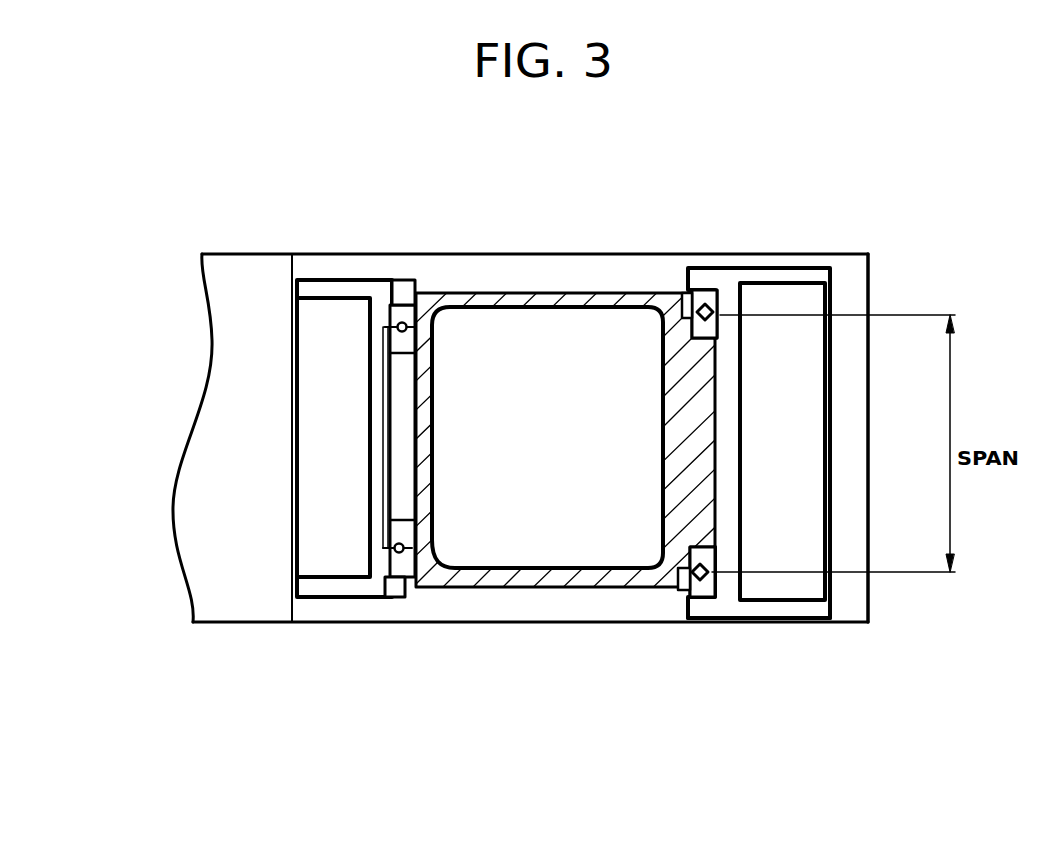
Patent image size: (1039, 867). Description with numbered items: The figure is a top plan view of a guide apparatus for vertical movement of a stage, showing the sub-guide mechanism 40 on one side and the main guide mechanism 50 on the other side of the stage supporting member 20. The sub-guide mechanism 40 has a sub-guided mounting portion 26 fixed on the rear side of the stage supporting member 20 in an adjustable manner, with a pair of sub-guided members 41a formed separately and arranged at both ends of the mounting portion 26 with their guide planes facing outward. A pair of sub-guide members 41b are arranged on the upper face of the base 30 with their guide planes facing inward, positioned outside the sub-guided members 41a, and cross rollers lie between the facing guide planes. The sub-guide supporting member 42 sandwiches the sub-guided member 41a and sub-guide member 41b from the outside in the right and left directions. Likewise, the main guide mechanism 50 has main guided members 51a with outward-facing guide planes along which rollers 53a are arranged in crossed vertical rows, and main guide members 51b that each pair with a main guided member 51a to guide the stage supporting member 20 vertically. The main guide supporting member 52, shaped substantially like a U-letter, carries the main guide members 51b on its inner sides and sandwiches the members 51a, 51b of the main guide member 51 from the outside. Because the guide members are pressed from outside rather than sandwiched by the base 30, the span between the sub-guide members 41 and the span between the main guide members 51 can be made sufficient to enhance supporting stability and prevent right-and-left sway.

The stage supporting member 20 is at (548, 588).
The sub-guided mounting portion 26 is at (397, 453).
The base 30 is at (848, 530).
The sub-guide mechanism 40 is at (418, 296).
The sub-guide members 41 is at (393, 303).
The sub-guided members 41a is at (417, 343).
The sub-guide members 41b is at (400, 300).
The sub-guide supporting member 42 is at (330, 280).
The main guide mechanism 50 is at (820, 268).
The main guide member 51 is at (720, 283).
The main guided members 51a is at (678, 318).
The main guide members 51b is at (703, 290).
The main guide supporting member 52 is at (770, 620).
The rollers 53a is at (710, 314).